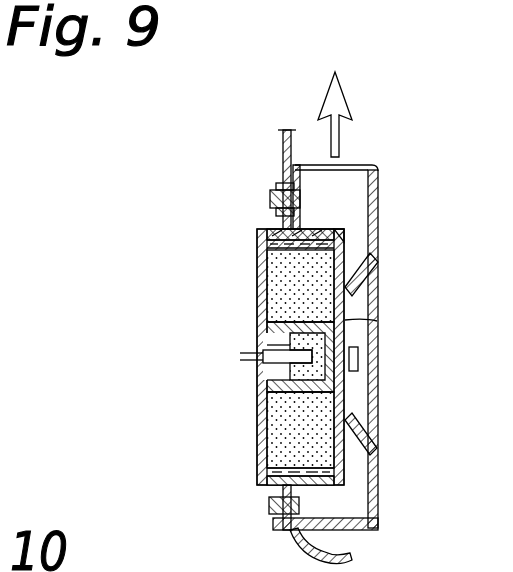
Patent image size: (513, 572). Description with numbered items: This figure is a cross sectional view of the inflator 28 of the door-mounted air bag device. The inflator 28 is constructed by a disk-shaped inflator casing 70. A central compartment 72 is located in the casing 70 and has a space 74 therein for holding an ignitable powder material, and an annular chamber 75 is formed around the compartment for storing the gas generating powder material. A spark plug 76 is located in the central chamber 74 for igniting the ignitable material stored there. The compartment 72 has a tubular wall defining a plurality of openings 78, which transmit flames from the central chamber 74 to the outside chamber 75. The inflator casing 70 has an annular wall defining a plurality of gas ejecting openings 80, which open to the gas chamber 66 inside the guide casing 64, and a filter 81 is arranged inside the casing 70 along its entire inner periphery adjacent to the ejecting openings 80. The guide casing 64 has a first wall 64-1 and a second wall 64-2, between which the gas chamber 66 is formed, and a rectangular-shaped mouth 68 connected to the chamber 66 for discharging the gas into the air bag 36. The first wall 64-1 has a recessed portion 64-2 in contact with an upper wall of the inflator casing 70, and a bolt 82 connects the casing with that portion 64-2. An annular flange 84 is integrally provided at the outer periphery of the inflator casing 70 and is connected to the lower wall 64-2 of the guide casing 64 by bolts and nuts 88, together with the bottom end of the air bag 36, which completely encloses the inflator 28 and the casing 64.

The inflator 28 is at (186, 292).
The air bag 36 is at (284, 148).
The guide casing 64 is at (388, 235).
The first wall 64-1 is at (378, 211).
The second wall 64-2 is at (300, 173).
The gas chamber 66 is at (357, 487).
The mouth 68 is at (352, 162).
The inflator casing 70 is at (264, 262).
The central compartment 72 is at (262, 414).
The space 74 is at (380, 318).
The annular chamber 75 is at (266, 310).
The spark plug 76 is at (268, 372).
The openings 78 is at (380, 288).
The gas ejecting openings 80 is at (315, 218).
The filter 81 is at (266, 232).
The bolt 82 is at (358, 356).
The annular flange 84 is at (270, 490).
The bolts and nuts 88 is at (268, 514).